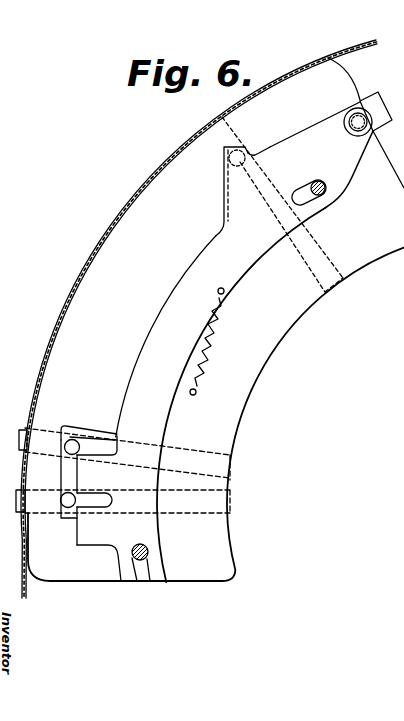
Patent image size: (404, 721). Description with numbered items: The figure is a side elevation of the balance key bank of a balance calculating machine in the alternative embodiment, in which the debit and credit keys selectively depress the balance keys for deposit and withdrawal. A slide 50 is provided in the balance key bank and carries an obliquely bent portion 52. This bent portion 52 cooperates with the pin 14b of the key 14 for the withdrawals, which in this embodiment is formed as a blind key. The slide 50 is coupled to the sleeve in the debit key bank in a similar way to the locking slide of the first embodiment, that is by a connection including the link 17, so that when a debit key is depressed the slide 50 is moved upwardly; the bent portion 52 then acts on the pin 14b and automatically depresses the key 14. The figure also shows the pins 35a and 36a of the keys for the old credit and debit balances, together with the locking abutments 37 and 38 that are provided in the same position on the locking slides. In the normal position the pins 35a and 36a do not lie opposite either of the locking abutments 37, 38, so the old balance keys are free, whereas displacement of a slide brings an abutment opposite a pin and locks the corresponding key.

The key for the withdrawals 14 is at (213, 145).
The pin 14b is at (247, 146).
The link 17 is at (368, 99).
The slide 50 is at (262, 252).
The obliquely bent portion 52 is at (226, 181).
The pin 35a is at (73, 442).
The pin 36a is at (66, 508).
The locking abutment 37 is at (77, 473).
The locking abutment 38 is at (77, 540).